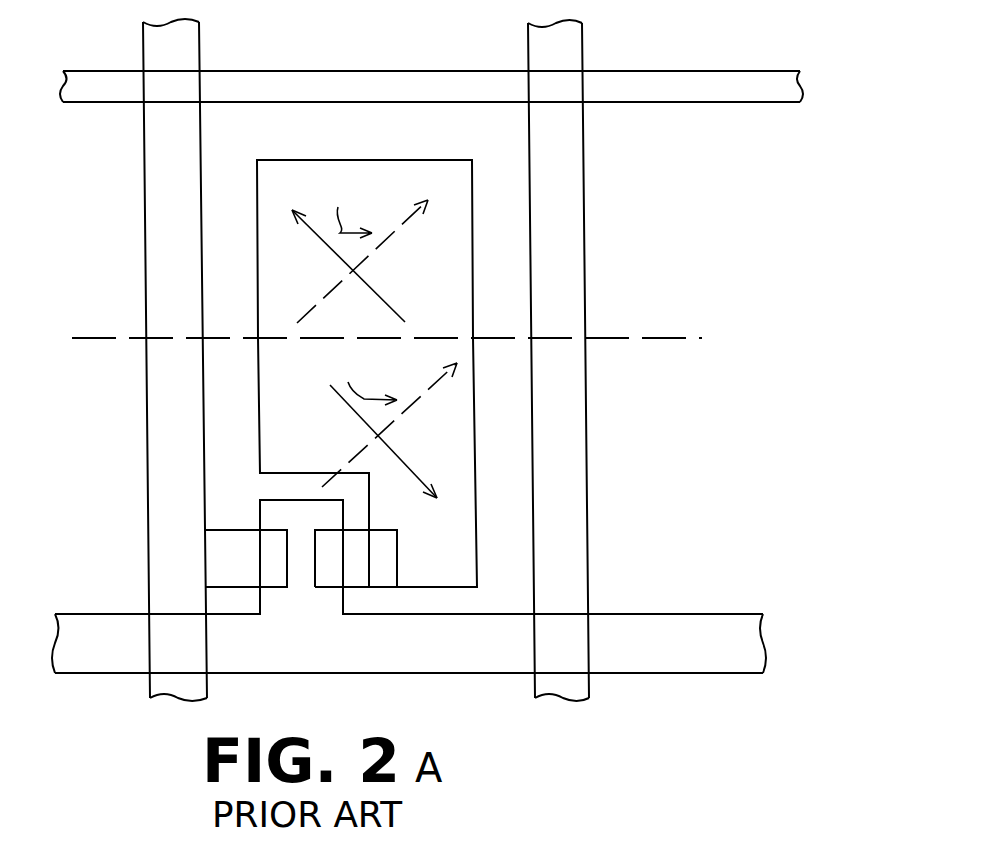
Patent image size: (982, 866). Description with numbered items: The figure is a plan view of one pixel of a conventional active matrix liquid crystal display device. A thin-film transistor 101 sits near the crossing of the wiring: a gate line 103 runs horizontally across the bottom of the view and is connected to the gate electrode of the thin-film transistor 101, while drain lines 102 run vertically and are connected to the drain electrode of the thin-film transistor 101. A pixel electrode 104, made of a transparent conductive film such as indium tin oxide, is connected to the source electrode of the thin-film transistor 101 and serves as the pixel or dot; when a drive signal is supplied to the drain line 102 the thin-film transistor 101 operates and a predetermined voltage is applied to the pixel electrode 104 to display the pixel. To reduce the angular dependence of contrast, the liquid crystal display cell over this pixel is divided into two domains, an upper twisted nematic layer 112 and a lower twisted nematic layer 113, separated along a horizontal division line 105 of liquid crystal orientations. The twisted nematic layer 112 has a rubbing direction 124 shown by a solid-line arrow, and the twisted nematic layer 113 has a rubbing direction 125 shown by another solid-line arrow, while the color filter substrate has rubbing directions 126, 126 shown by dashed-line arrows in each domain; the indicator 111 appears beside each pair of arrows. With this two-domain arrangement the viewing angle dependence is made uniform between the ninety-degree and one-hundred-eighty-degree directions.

The thin-film transistor 101 is at (288, 577).
The drain line 102 is at (188, 51).
The gate line 103 is at (97, 628).
The pixel electrode 104 is at (472, 223).
The division line 105 is at (627, 340).
The alignment direction indicator 111 is at (361, 290).
The twisted nematic layer 112 is at (258, 263).
The twisted nematic layer 113 is at (470, 545).
The rubbing direction 124 is at (382, 297).
The rubbing direction 125 is at (398, 455).
The rubbing direction 126 is at (407, 222).